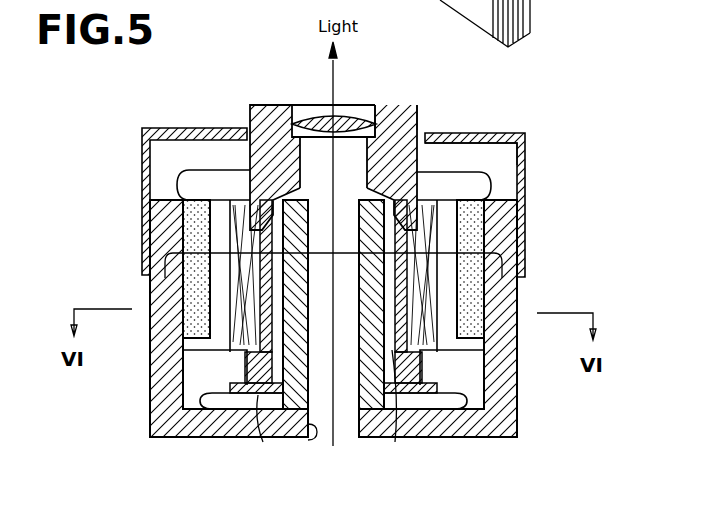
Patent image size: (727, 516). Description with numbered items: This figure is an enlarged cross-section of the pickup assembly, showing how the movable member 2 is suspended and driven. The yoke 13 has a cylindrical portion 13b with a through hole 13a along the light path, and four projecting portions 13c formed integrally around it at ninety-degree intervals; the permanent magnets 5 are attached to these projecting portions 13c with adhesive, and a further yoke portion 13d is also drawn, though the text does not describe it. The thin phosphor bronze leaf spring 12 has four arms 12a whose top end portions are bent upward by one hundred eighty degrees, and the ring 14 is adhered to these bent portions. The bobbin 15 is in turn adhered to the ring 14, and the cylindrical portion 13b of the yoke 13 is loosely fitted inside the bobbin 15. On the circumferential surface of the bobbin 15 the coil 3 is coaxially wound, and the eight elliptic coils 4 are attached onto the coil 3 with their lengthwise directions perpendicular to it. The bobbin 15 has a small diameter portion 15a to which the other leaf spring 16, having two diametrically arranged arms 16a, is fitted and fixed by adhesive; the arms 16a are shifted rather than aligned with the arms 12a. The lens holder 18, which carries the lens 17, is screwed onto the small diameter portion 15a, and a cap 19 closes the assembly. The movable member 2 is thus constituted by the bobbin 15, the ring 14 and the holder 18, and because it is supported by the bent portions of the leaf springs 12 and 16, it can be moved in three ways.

The movable member 2 is at (440, 158).
The coil 3 is at (292, 262).
The elliptic coils 4 is at (200, 351).
The permanent magnets 5 is at (188, 215).
The leaf spring 12 is at (372, 440).
The arms 12a is at (451, 440).
The yoke 13 is at (503, 375).
The through hole 13a is at (310, 434).
The cylindrical portion 13b is at (396, 440).
The projecting portions 13c is at (163, 288).
The housing top flange 13d is at (163, 196).
The support ring 14 is at (263, 428).
The bobbin 15 is at (256, 190).
The small diameter portion 15a is at (391, 125).
The other leaf spring 16 is at (474, 158).
The arms 16a is at (491, 184).
The lens 17 is at (348, 112).
The lens holder 18 is at (262, 105).
The cap 19 is at (147, 172).